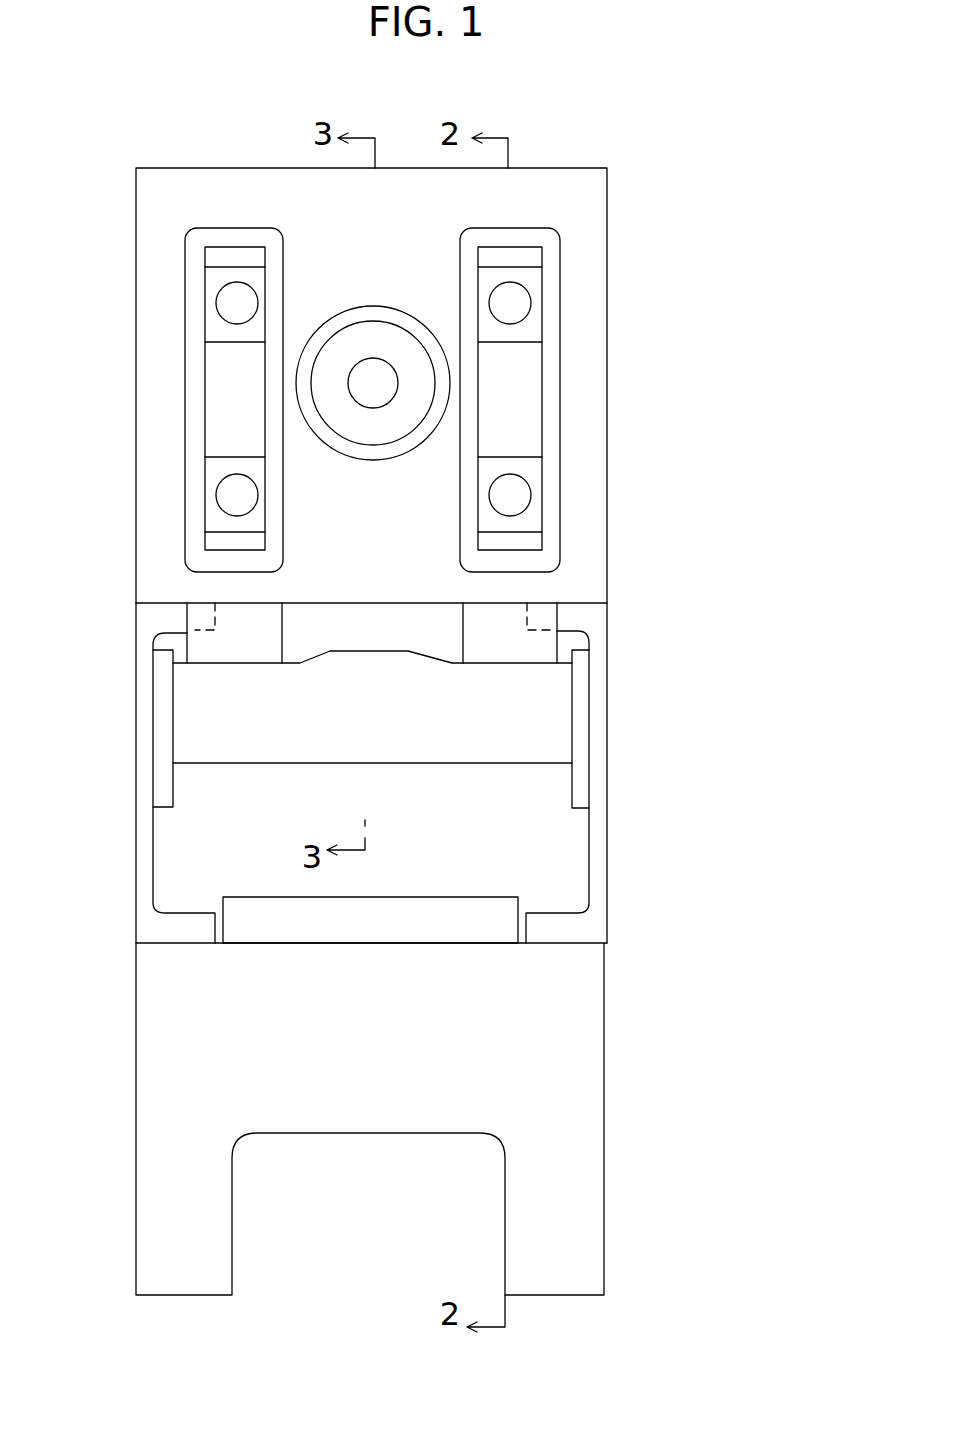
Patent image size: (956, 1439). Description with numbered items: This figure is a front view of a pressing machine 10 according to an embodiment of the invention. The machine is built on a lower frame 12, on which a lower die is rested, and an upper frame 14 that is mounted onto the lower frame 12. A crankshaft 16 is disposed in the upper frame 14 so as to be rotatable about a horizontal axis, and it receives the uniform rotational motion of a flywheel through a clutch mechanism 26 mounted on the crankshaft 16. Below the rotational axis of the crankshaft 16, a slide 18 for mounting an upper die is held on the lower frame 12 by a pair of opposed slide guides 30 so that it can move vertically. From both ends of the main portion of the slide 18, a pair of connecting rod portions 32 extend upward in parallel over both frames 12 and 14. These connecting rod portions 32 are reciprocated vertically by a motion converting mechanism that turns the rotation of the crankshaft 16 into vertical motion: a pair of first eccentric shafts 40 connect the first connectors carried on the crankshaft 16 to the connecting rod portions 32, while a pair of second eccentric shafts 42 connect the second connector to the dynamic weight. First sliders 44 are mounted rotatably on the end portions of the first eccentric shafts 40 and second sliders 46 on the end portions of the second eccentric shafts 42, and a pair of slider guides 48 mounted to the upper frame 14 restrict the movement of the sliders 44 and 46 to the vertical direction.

The pressing machine 10 is at (557, 157).
The lower frame 12 is at (590, 980).
The upper frame 14 is at (602, 197).
The crankshaft 16 is at (375, 372).
The slide 18 is at (290, 752).
The clutch mechanism 26 is at (395, 420).
The slide guides 30 is at (160, 800).
The connecting rod portions 32 is at (262, 645).
The first eccentric shafts 40 is at (220, 510).
The second eccentric shafts 42 is at (220, 320).
The first sliders 44 is at (207, 487).
The second sliders 46 is at (203, 280).
The slider guides 48 is at (275, 229).